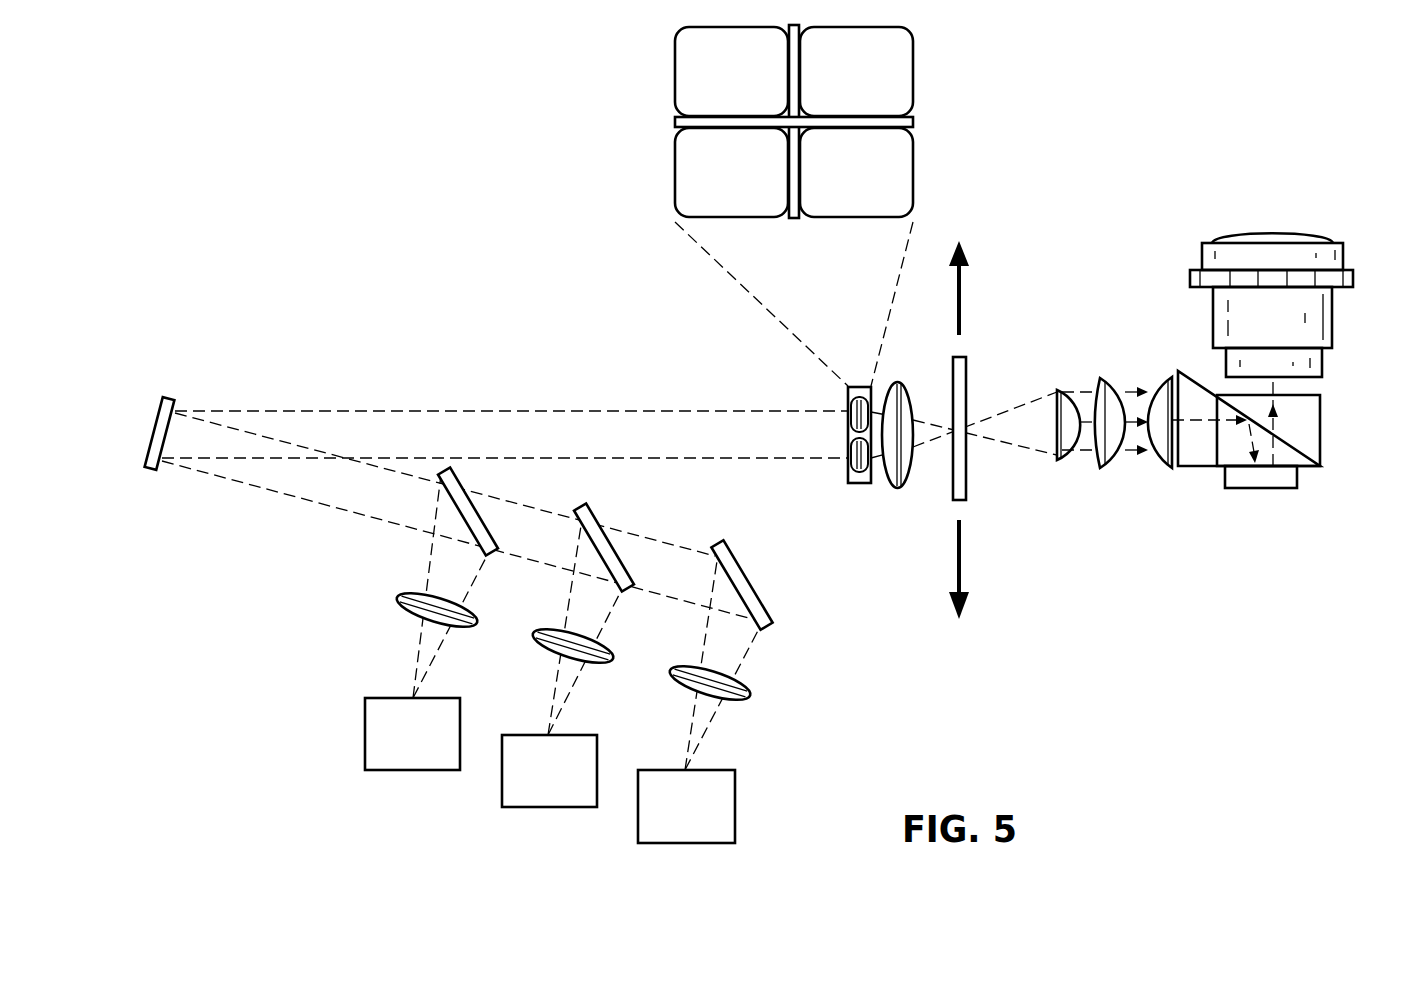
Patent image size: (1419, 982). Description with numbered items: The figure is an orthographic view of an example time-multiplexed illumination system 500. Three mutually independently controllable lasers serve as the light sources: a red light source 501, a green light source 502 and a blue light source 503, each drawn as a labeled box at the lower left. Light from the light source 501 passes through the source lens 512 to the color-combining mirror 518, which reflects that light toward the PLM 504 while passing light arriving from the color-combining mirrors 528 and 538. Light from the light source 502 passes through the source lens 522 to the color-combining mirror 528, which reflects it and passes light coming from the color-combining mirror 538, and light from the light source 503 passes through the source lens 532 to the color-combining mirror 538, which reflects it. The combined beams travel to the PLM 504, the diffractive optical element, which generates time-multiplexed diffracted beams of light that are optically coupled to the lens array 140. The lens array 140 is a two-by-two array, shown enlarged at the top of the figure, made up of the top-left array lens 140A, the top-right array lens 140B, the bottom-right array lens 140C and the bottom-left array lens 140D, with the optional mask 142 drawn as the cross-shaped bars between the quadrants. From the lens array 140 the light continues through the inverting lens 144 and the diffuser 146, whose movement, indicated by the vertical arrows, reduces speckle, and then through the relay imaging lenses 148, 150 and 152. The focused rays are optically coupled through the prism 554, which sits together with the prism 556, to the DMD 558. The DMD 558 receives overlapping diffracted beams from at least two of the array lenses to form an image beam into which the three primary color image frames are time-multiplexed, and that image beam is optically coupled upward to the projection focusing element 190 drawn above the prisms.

The illumination system 500 is at (379, 183).
The lens array 140 is at (807, 254).
The array lens 140A is at (763, 86).
The array lens 140B is at (888, 86).
The array lens 140C is at (888, 186).
The array lens 140D is at (763, 186).
The mask 142 is at (915, 118).
The inverting lens 144 is at (898, 490).
The diffuser 146 is at (968, 384).
The relay imaging lens 148 is at (1058, 462).
The relay imaging lens 150 is at (1104, 378).
The relay imaging lens 152 is at (1170, 470).
The projection focusing element 190 is at (1345, 258).
The light source 501 is at (364, 746).
The light source 502 is at (501, 782).
The light source 503 is at (638, 818).
The PLM 504 is at (170, 398).
The source lens 512 is at (402, 608).
The color-combining mirror 518 is at (493, 554).
The source lens 522 is at (538, 644).
The color-combining mirror 528 is at (629, 591).
The source lens 532 is at (672, 682).
The color-combining mirror 538 is at (768, 630).
The prism 554 is at (1198, 378).
The prism 556 is at (1322, 430).
The DMD 558 is at (1298, 476).